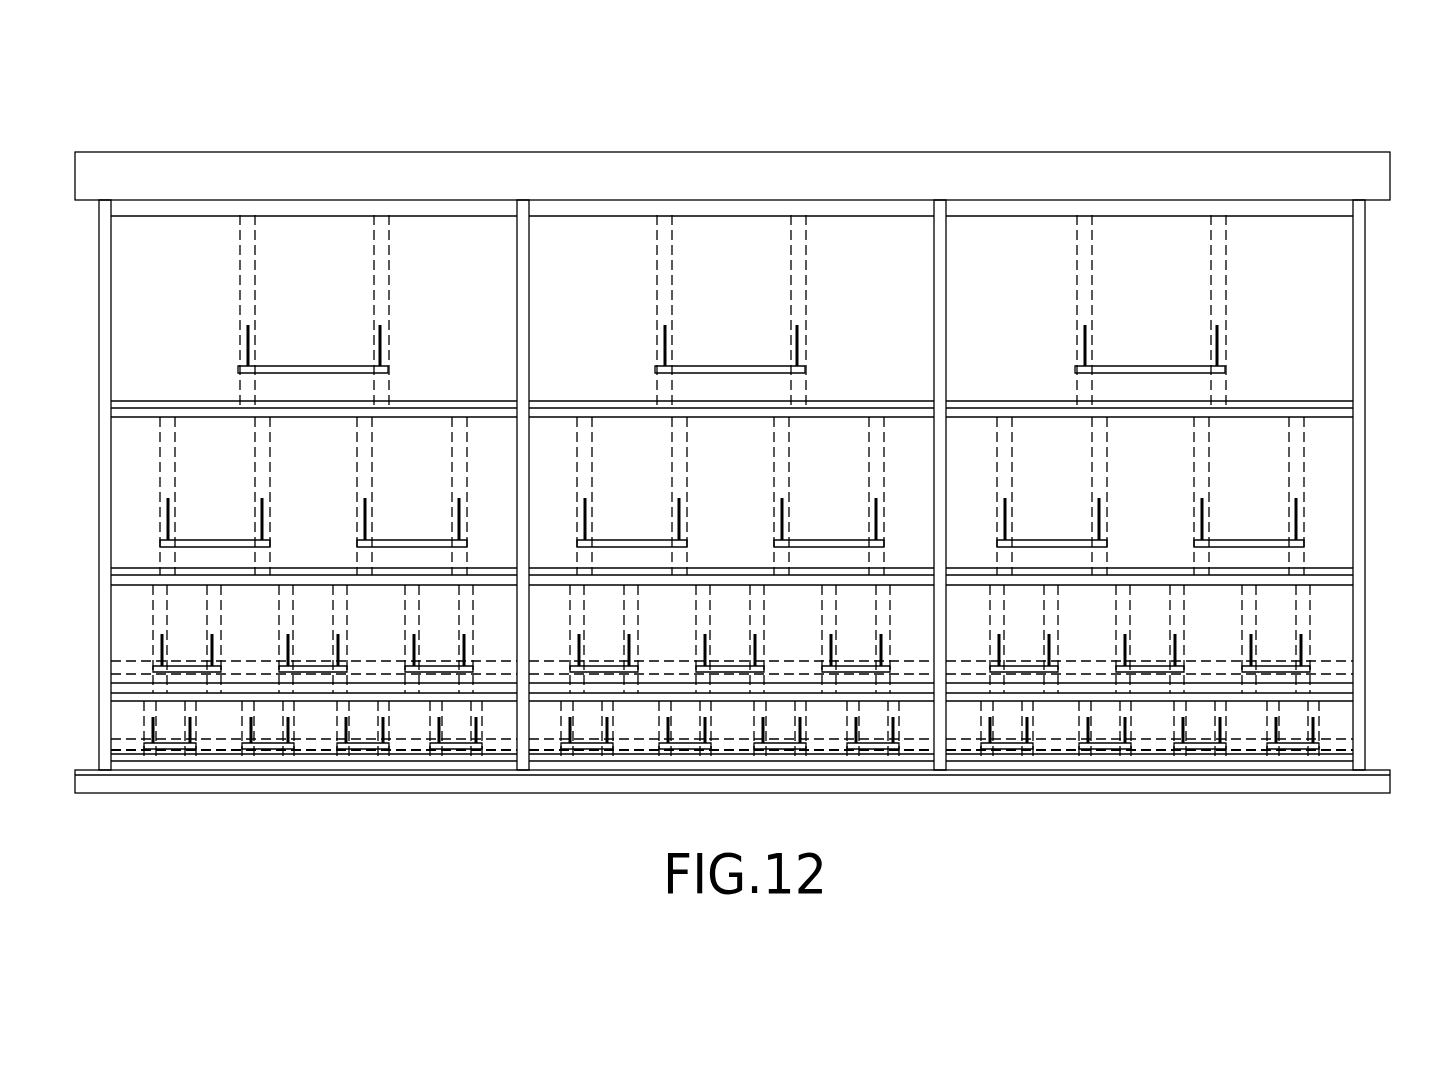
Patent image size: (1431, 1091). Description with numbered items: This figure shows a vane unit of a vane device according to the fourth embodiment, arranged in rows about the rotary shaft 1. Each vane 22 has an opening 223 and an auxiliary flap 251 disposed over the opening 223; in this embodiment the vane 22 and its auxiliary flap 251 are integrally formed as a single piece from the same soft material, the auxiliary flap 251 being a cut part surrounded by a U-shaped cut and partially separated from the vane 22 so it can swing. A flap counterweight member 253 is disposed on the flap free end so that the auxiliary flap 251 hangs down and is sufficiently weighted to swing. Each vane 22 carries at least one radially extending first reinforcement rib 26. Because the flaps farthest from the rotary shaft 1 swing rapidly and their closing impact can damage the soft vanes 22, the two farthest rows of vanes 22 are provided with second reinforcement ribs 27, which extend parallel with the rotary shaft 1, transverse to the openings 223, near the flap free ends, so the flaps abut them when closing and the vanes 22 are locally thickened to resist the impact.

The rotary shaft 1 is at (723, 167).
The vane 22 is at (150, 265).
The first reinforcement rib 26 is at (250, 223).
The second reinforcement rib 27 is at (127, 664).
The opening 223 is at (380, 347).
The auxiliary flap 251 is at (360, 732).
The flap counterweight member 253 is at (367, 748).